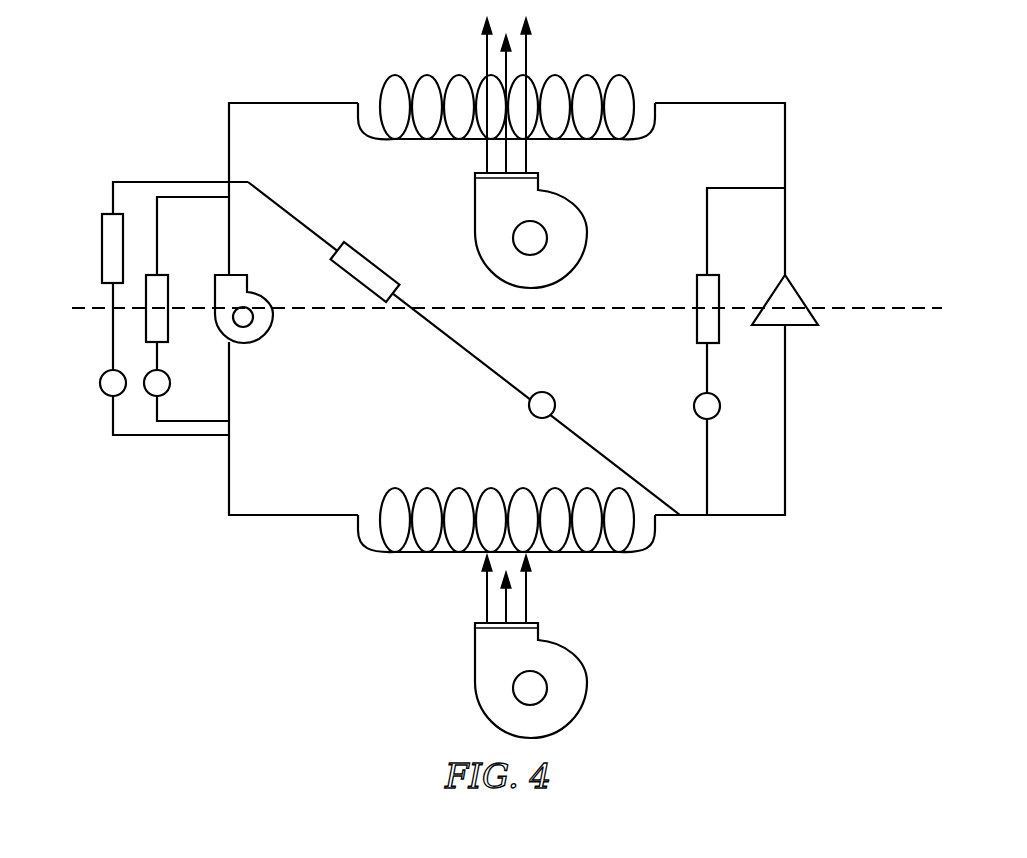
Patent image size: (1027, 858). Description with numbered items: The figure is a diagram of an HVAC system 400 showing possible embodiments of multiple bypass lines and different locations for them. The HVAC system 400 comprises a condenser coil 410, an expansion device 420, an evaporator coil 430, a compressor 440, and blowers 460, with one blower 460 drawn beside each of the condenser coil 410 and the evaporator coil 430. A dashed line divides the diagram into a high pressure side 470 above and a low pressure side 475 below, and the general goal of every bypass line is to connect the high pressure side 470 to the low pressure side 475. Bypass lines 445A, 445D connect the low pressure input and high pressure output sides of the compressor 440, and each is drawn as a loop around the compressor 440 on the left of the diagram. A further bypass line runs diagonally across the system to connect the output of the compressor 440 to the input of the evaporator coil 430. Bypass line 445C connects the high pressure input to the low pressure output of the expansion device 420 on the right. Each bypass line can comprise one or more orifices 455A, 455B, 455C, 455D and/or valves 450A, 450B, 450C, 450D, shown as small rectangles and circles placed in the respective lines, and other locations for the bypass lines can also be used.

The HVAC system 400 is at (806, 620).
The condenser coil 410 is at (593, 72).
The expansion device 420 is at (808, 326).
The evaporator coil 430 is at (580, 555).
The compressor 440 is at (270, 330).
The bypass line 445A is at (158, 230).
The bypass line 445C is at (707, 228).
The bypass line 445D is at (147, 182).
The valve 450A is at (170, 380).
The valve 450B is at (530, 410).
The valve 450C is at (695, 403).
The valve 450D is at (100, 382).
The orifice 455A is at (146, 325).
The orifice 455B is at (368, 255).
The orifice 455C is at (697, 290).
The orifice 455D is at (102, 238).
The blower 460 is at (578, 212).
The high pressure side 470 is at (919, 216).
The low pressure side 475 is at (919, 429).